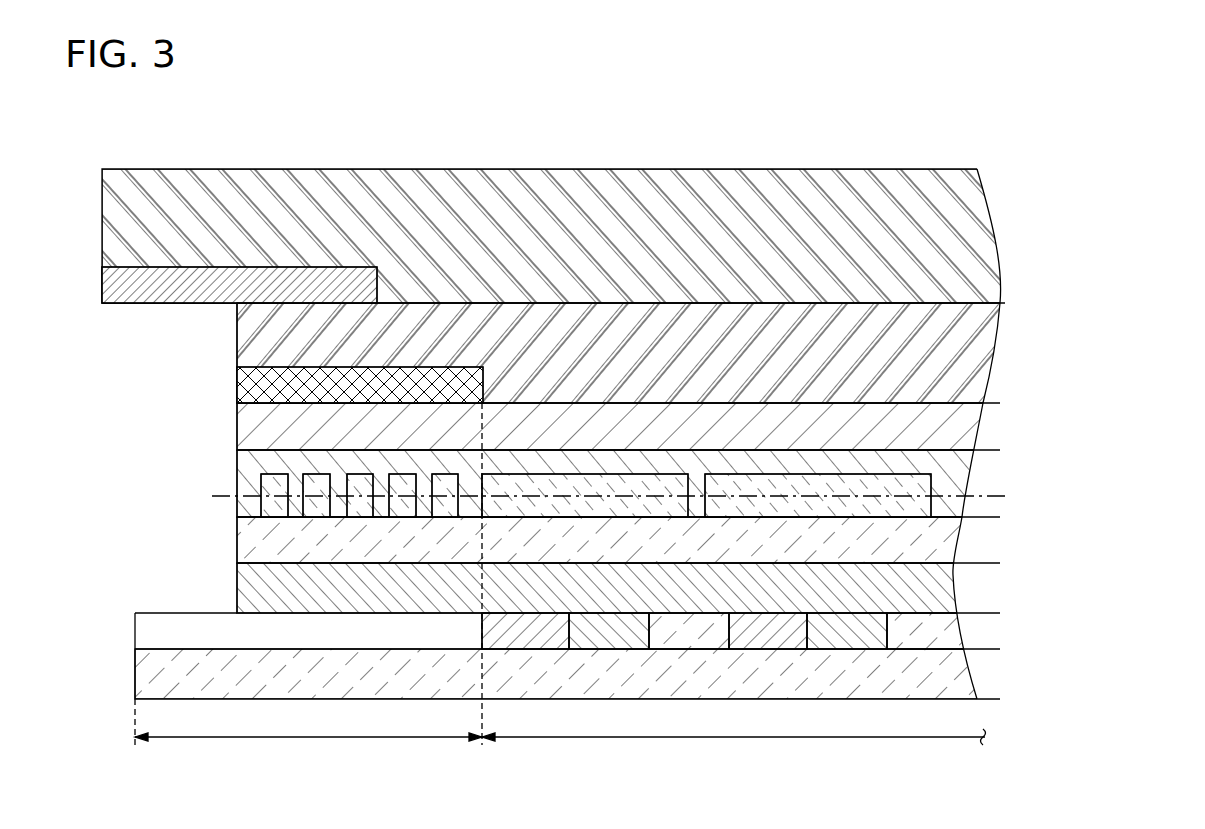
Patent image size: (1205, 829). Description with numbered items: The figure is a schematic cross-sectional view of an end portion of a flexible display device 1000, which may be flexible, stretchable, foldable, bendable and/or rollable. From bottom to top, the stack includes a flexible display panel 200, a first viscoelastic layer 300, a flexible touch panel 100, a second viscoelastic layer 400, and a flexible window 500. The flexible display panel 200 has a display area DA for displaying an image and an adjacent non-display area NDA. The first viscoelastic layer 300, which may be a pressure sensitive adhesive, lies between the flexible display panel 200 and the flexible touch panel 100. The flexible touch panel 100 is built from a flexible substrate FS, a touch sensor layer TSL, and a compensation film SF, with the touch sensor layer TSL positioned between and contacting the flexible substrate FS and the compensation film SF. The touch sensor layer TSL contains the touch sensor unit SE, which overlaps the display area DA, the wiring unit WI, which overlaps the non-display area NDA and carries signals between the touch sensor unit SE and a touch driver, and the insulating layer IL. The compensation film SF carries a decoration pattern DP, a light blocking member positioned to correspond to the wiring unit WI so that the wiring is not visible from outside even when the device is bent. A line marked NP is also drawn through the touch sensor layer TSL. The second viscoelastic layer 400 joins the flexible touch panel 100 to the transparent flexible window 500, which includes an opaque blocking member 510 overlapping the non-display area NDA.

The flexible display device 1000 is at (647, 90).
The flexible window 500 is at (972, 239).
The blocking member 510 is at (118, 290).
The second viscoelastic layer 400 is at (975, 360).
The decoration pattern DP is at (258, 386).
The flexible touch panel 100 is at (704, 484).
The compensation film SF is at (957, 415).
The touch sensor layer TSL is at (679, 490).
The insulating layer IL is at (957, 461).
The touch sensor unit SE is at (915, 487).
The wiring unit WI is at (447, 508).
The flexible substrate FS is at (938, 548).
The first viscoelastic layer 300 is at (935, 597).
The flexible display panel 200 is at (129, 613).
The neutral plane NP is at (212, 496).
The non-display area NDA is at (308, 585).
The display area DA is at (734, 748).